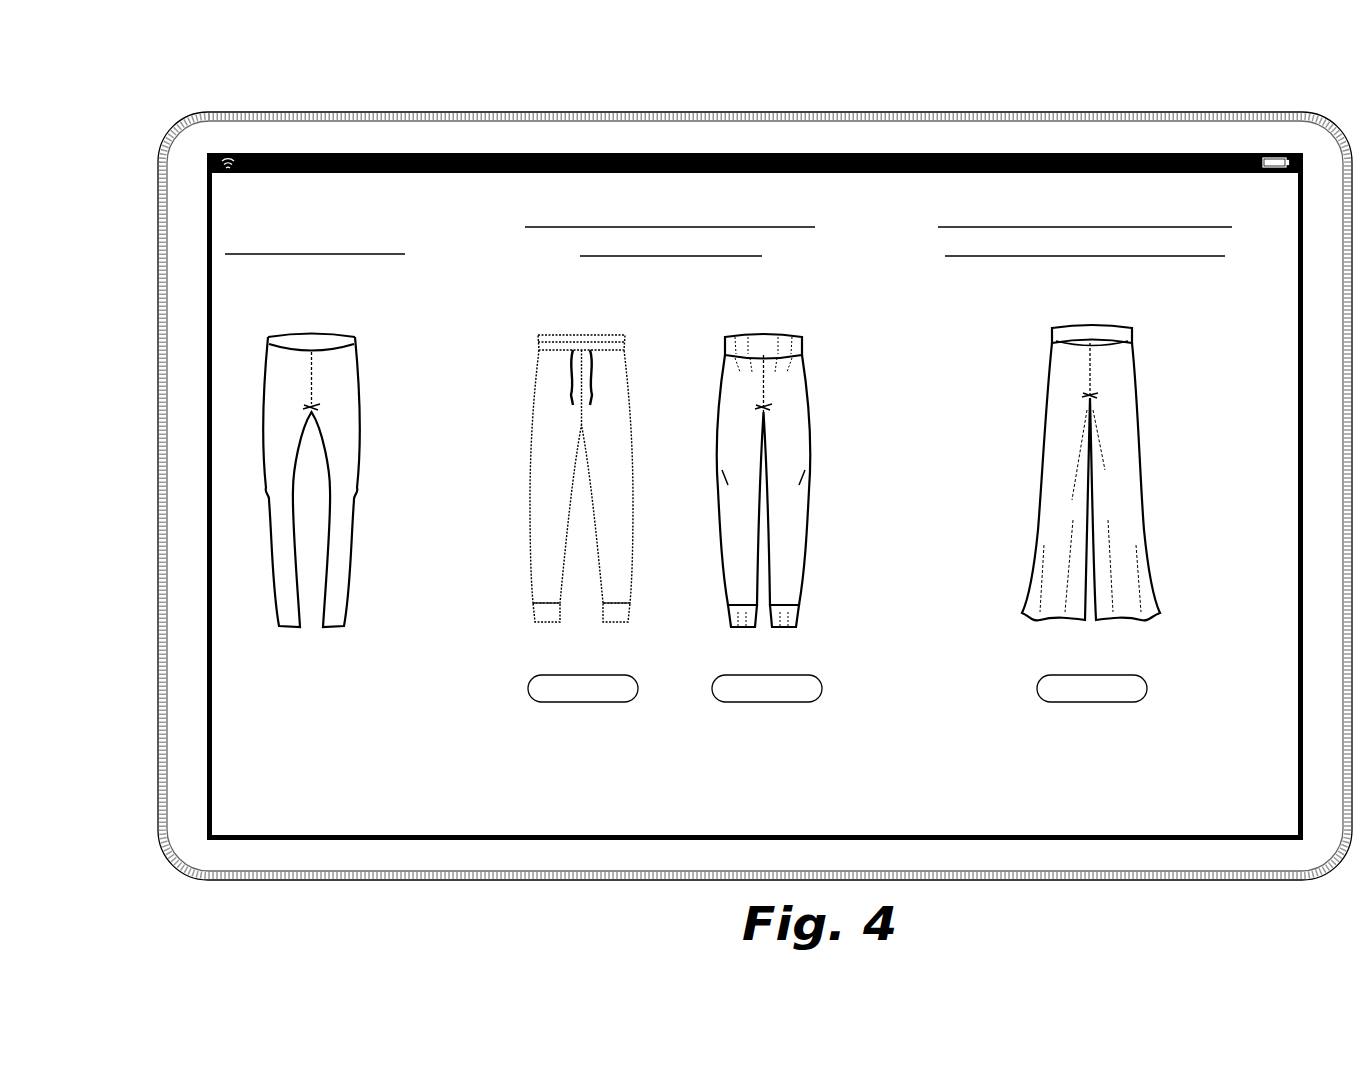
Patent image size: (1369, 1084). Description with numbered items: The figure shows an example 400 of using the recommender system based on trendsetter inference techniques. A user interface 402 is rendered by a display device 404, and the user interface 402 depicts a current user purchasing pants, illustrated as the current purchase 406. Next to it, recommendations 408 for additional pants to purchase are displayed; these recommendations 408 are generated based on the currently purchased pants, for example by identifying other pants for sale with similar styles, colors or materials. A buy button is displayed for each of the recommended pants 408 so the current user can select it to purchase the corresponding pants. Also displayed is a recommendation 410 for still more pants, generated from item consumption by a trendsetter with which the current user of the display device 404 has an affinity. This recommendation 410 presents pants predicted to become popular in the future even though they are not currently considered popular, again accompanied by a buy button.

The example 400 is at (127, 80).
The user interface 402 is at (1254, 808).
The display device 404 is at (1173, 110).
The current purchase 406 is at (314, 221).
The recommendations 408 is at (672, 194).
The recommendation 410 is at (1088, 194).